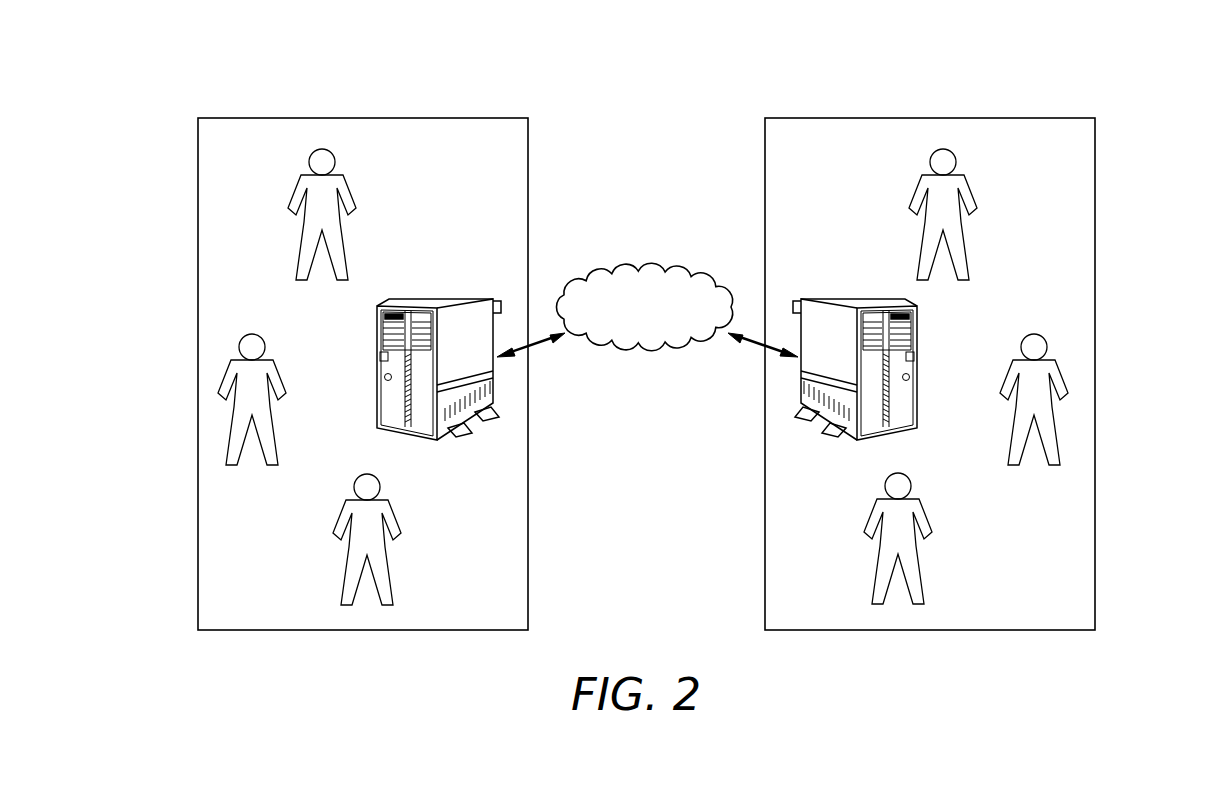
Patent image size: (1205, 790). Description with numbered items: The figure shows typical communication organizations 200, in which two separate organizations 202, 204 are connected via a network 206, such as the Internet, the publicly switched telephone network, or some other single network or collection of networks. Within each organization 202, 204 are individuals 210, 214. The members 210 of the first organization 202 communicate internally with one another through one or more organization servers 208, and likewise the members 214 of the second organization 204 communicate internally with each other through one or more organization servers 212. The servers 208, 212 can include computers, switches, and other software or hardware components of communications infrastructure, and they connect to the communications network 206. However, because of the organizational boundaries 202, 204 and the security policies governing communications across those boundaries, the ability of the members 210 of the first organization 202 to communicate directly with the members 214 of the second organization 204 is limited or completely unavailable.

The communication organizations 200 is at (713, 100).
The first organization 202 is at (355, 118).
The second organization 204 is at (932, 118).
The network 206 is at (645, 268).
The organization servers 208 is at (438, 299).
The organization servers 212 is at (850, 298).
The members 210 is at (230, 497).
The individuals 214 is at (1053, 502).